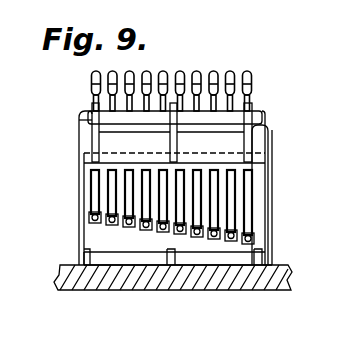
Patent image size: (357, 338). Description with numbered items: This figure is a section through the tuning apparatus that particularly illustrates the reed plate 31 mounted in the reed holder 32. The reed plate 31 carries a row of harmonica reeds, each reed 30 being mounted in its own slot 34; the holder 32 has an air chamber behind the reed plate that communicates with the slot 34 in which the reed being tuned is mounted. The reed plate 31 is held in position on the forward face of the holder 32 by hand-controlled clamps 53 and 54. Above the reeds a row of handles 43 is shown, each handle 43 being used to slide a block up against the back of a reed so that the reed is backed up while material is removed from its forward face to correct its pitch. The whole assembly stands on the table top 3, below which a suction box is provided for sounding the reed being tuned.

The table top 3 is at (268, 291).
The reed 30 is at (238, 198).
The reed plate 31 is at (258, 218).
The holder 32 is at (270, 165).
The slot 34 is at (252, 188).
The handle 43 is at (254, 85).
The hand-controlled clamp 53 is at (247, 137).
The hand-controlled clamp 54 is at (264, 260).